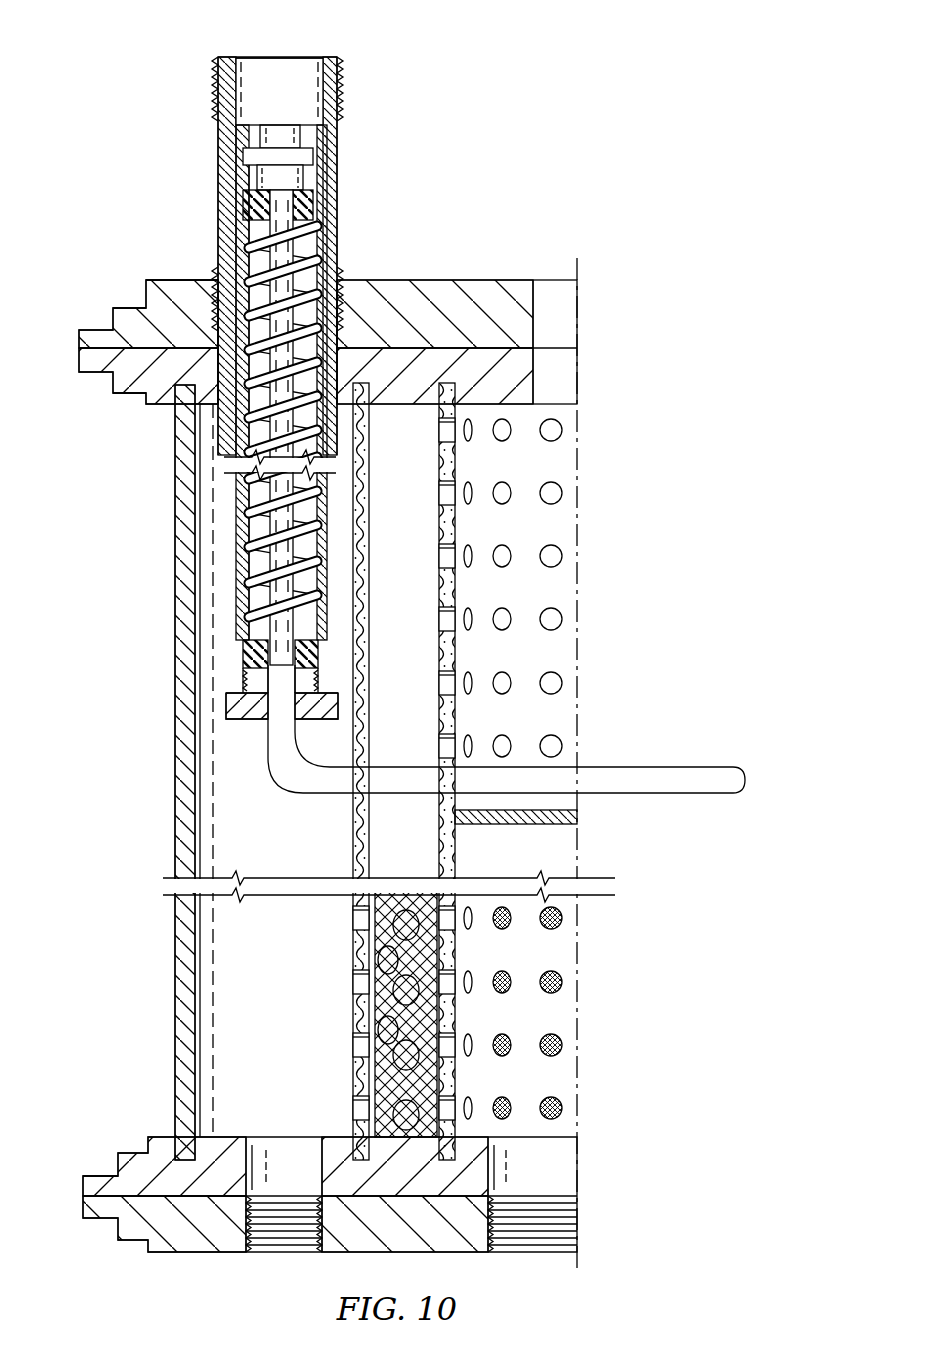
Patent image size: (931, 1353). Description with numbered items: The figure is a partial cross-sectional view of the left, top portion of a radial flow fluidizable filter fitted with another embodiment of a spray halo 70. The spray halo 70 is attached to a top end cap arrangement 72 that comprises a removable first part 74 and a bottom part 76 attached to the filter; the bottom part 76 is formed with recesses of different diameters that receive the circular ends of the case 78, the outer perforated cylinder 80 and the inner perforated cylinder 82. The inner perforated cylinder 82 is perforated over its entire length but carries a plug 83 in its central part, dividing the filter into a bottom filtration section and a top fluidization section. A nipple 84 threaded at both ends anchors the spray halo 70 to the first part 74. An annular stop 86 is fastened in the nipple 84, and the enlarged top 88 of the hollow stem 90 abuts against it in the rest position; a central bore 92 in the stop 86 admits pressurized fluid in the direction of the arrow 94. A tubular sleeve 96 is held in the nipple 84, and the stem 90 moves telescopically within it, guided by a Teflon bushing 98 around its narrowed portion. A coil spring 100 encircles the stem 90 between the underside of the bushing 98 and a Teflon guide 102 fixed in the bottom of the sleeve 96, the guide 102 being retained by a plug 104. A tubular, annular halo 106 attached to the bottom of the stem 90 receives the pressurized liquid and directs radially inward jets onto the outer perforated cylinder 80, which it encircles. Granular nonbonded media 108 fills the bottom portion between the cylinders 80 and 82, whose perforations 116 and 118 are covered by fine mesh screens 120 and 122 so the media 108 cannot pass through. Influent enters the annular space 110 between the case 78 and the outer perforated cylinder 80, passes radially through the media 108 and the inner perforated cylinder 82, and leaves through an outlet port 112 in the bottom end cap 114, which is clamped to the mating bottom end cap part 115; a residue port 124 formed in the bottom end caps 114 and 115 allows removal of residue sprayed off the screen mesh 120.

The spray halo 70 is at (436, 181).
The top end cap arrangement 72 is at (92, 319).
The first part 74 is at (122, 309).
The bottom part 76 is at (124, 398).
The case 78 is at (178, 510).
The outer perforated cylinder 80 is at (352, 851).
The inner perforated cylinder 82 is at (440, 716).
The plug 83 is at (562, 824).
The nipple 84 is at (341, 100).
The annular stop 86 is at (318, 140).
The top 88 is at (306, 178).
The stem 90 is at (255, 246).
The central bore 92 is at (273, 128).
The arrow 94 is at (269, 83).
The tubular sleeve 96 is at (241, 168).
The Teflon bushing 98 is at (327, 236).
The coil spring 100 is at (245, 566).
The Teflon guide 102 is at (243, 652).
The plug 104 is at (240, 721).
The halo 106 is at (597, 767).
The nonbonded media 108 is at (378, 1075).
The annular space 110 is at (210, 795).
The outlet port 112 is at (545, 1239).
The bottom end cap 114 is at (130, 1243).
The bottom end cap part 115 is at (92, 1177).
The perforations 116 is at (418, 905).
The perforations 118 is at (510, 908).
The fine mesh screen 120 is at (378, 1010).
The fine mesh screen 122 is at (564, 916).
The residue port 124 is at (290, 1237).